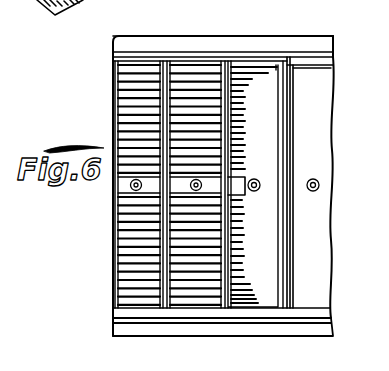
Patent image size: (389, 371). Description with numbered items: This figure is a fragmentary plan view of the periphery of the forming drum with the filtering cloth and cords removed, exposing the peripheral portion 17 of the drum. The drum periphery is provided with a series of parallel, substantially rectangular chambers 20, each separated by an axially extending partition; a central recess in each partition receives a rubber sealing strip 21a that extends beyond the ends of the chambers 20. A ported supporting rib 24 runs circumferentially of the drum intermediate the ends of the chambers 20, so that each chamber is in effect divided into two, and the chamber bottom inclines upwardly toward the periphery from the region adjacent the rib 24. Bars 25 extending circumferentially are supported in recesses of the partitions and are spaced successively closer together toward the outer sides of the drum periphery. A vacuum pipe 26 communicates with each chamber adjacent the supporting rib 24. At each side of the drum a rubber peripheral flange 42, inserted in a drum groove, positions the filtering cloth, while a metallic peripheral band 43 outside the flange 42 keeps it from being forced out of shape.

The peripheral portion 17 is at (172, 45).
The metallic peripheral band 43 is at (222, 52).
The peripheral flange 42 is at (273, 58).
The sealing strip 21a is at (292, 92).
The chamber 20 is at (314, 120).
The ported supporting rib 24 is at (245, 182).
The vacuum pipe 26 is at (318, 181).
The bars 25 is at (245, 251).